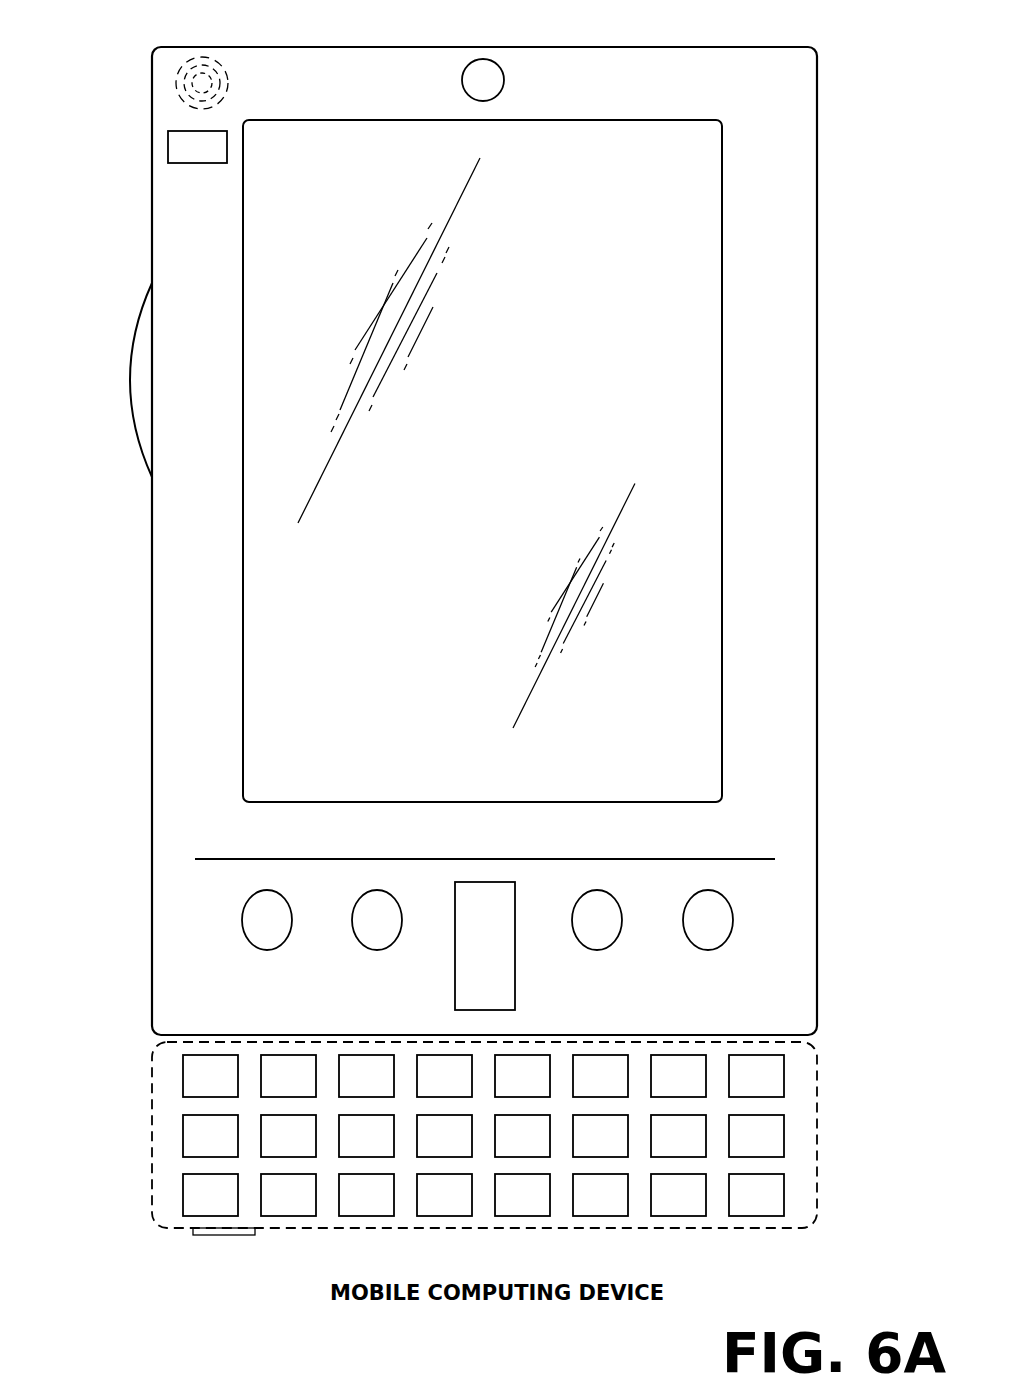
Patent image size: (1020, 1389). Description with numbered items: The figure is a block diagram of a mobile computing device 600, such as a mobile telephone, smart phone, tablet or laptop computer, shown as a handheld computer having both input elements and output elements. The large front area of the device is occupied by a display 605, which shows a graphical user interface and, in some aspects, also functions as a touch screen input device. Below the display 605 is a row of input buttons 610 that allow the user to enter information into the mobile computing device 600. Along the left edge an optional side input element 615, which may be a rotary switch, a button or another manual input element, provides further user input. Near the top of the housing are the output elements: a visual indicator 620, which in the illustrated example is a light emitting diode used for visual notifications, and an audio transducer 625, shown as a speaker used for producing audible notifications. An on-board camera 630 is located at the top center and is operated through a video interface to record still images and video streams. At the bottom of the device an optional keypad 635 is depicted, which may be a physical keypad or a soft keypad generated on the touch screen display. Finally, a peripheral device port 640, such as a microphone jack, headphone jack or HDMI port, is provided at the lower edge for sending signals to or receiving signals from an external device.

The mobile computing device 600 is at (779, 47).
The display 605 is at (268, 637).
The input buttons 610 is at (264, 950).
The side input element 615 is at (130, 380).
The visual indicator 620 is at (168, 147).
The audio transducer 625 is at (162, 84).
The on-board camera 630 is at (485, 60).
The keypad 635 is at (156, 1132).
The peripheral device port 640 is at (200, 1236).